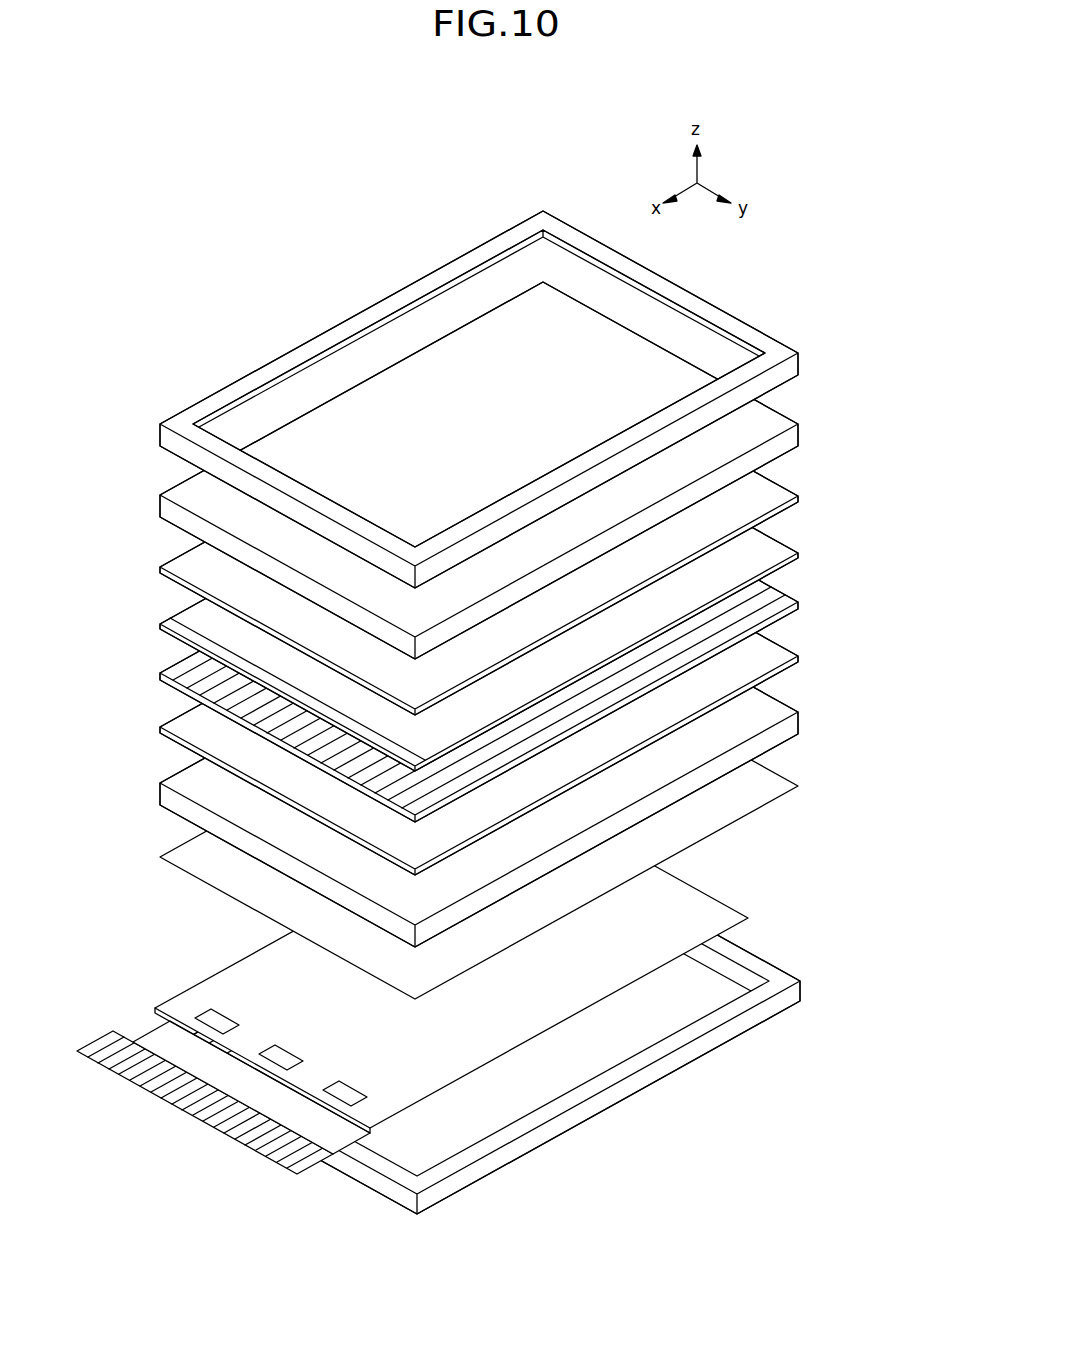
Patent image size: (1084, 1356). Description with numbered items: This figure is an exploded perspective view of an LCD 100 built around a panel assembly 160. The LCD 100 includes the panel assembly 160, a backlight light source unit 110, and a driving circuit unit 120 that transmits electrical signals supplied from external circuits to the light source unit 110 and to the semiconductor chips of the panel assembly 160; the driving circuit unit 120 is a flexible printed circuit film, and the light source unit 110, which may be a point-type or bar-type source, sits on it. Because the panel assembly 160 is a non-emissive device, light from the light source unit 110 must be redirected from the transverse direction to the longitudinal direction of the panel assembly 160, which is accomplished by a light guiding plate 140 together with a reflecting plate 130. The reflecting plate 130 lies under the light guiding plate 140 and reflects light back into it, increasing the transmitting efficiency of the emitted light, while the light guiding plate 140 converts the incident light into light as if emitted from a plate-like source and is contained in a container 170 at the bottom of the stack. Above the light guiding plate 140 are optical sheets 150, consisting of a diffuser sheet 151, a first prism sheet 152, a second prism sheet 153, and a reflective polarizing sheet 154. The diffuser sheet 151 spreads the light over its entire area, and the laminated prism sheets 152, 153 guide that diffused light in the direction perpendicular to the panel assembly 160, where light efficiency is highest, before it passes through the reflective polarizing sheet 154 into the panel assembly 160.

The LCD 100 is at (292, 219).
The light source unit 110 is at (204, 1011).
The driving circuit unit 120 is at (719, 911).
The reflecting plate 130 is at (783, 787).
The light guiding plate 140 is at (783, 729).
The optical sheets 150 is at (544, 614).
The diffuser sheet 151 is at (783, 656).
The first prism sheet 152 is at (783, 602).
The second prism sheet 153 is at (783, 551).
The reflective polarizing sheet 154 is at (876, 671).
The panel assembly 160 is at (498, 341).
The container 170 is at (783, 994).